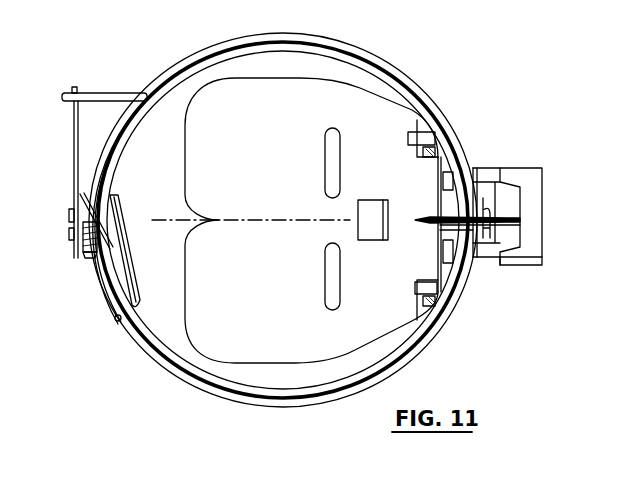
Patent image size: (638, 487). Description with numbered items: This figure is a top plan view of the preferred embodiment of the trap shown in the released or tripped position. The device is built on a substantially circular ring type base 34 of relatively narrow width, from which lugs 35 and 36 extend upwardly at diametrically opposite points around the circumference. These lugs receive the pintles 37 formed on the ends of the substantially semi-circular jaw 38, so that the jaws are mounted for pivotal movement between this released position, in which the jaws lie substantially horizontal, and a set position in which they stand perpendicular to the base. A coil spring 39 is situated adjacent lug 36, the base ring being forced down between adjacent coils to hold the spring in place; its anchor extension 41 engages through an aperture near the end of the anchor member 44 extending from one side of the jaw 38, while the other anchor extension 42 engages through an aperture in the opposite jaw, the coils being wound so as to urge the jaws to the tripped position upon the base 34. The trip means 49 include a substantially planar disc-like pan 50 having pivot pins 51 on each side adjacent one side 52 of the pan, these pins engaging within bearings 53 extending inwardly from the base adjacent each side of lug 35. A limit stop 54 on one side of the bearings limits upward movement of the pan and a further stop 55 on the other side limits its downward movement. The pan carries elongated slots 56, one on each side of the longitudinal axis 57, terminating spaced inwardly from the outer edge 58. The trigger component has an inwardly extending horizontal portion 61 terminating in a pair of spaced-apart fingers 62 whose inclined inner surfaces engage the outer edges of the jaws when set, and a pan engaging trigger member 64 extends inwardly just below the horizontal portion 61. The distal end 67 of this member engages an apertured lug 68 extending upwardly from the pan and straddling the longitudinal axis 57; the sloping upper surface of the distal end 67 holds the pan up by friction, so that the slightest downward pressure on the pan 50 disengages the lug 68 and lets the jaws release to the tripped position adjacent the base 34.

The ring type base 34 is at (98, 288).
The lug 35 is at (472, 165).
The lug 36 is at (86, 257).
The pintles 37 is at (485, 214).
The semi-circular jaw 38 is at (303, 34).
The coil spring 39 is at (71, 246).
The anchor extension 41 is at (75, 130).
The anchor extension 42 is at (136, 300).
The anchor member 44 is at (127, 92).
The trip means 49 is at (352, 98).
The pan 50 is at (240, 340).
The pivot pins 51 is at (430, 268).
The side of pan 52 is at (442, 186).
The bearings 53 is at (433, 129).
The limit stop 54 is at (408, 132).
The stop 55 is at (410, 296).
The elongated slots 56 is at (324, 140).
The longitudinal axis 57 is at (245, 222).
The outer edge of pan 58 is at (228, 92).
The horizontal portion 61 is at (540, 229).
The fingers 62 is at (512, 262).
The pan engaging trigger member 64 is at (446, 226).
The distal end 67 is at (424, 218).
The apertured lug 68 is at (385, 178).